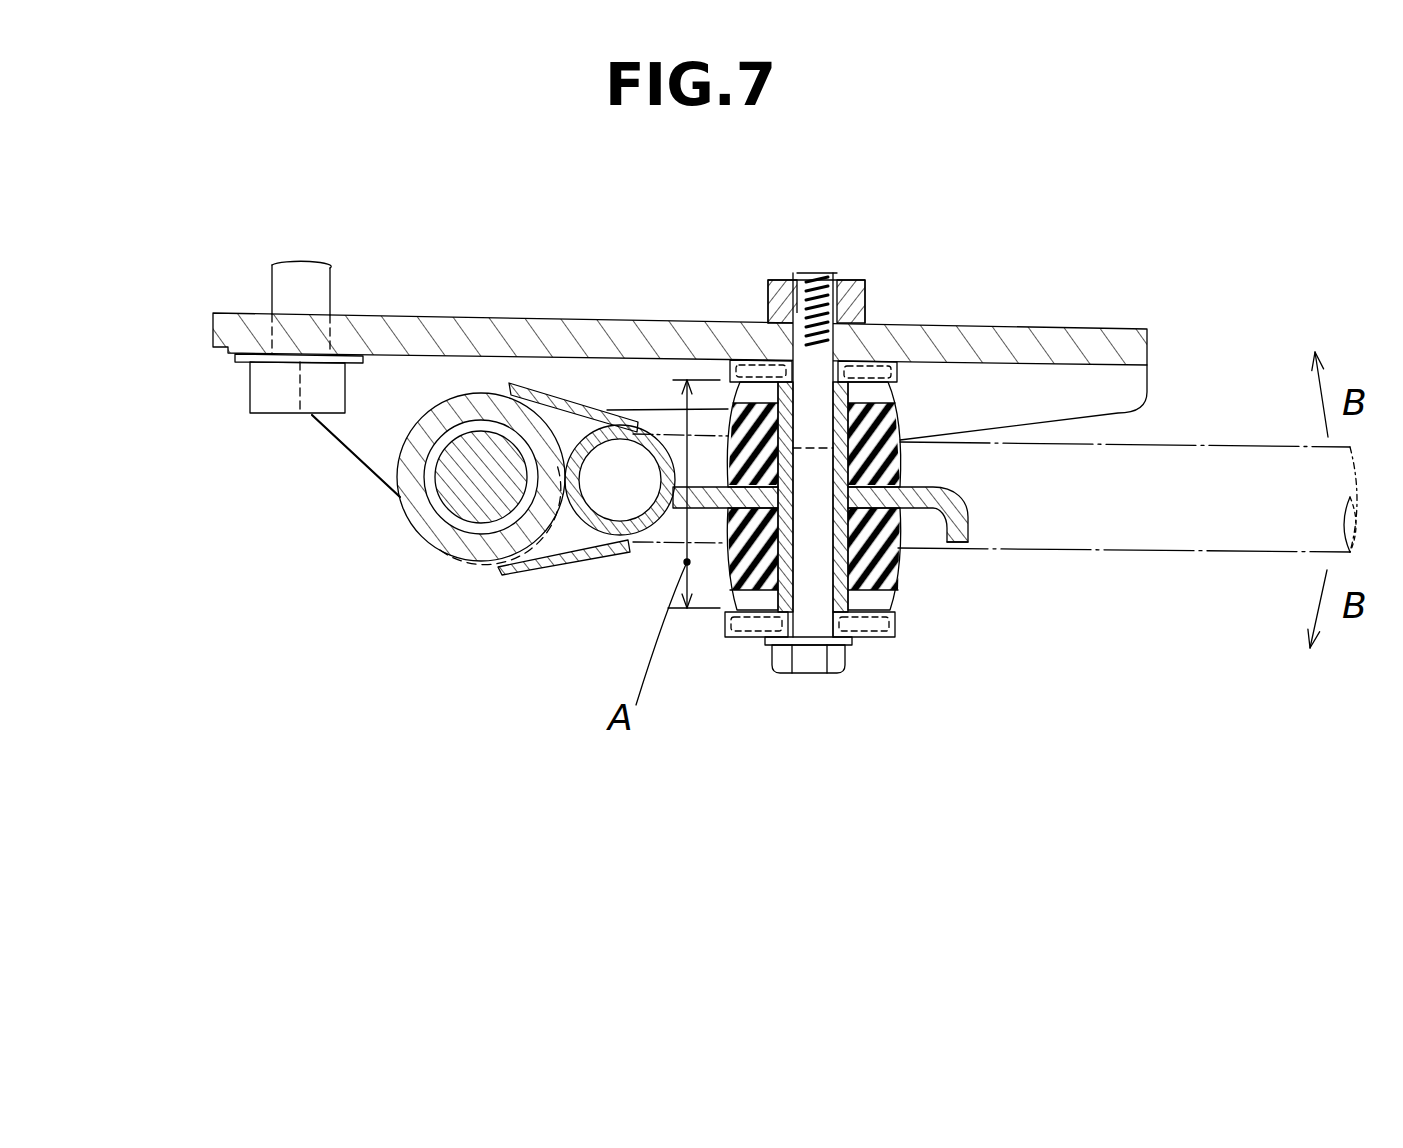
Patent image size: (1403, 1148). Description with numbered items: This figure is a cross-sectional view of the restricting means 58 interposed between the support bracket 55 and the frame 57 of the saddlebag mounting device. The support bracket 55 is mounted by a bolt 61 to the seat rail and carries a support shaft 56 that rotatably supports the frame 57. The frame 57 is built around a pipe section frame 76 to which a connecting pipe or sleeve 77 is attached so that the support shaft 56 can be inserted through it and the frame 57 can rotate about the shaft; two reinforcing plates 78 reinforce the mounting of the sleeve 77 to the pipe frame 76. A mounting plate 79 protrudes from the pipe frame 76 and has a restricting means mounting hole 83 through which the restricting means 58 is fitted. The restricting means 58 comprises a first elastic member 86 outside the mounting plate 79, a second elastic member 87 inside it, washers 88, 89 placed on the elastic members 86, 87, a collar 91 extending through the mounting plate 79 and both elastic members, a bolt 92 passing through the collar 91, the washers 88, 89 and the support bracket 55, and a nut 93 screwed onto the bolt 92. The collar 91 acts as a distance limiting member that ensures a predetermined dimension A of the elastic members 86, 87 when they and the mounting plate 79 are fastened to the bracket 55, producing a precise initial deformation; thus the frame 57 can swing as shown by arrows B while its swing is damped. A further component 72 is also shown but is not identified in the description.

The support bracket 55 is at (1068, 318).
The support shaft 56 is at (467, 490).
The frame 57 is at (1165, 422).
The restricting means 58 is at (876, 554).
The bolt 61 is at (277, 413).
The upper nut 72 is at (770, 284).
The pipe section frame 76 is at (578, 425).
The connecting pipe or sleeve 77 is at (483, 565).
The reinforcing plates 78 is at (548, 385).
The mounting plate 79 is at (972, 528).
The restricting means mounting hole 83 is at (900, 472).
The first elastic member 86 is at (898, 560).
The second elastic member 87 is at (898, 420).
The washer 88 is at (825, 732).
The washer 89 is at (900, 395).
The collar 91 is at (895, 595).
The bolt 92 is at (852, 668).
The nut 93 is at (855, 370).